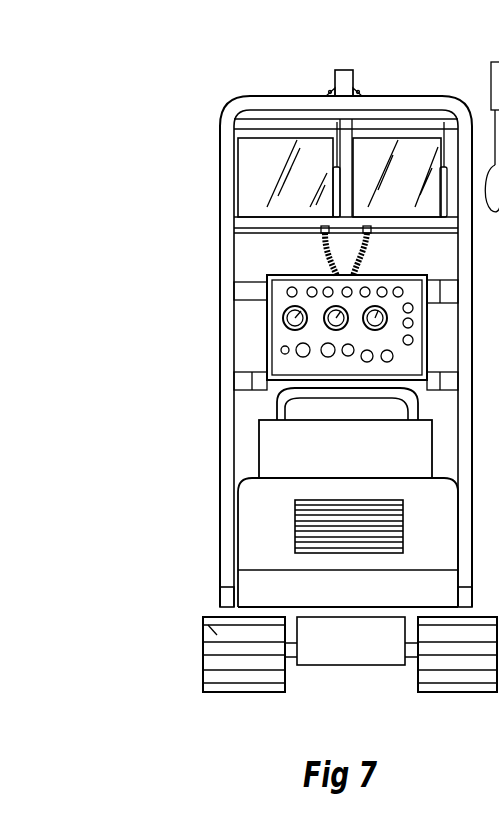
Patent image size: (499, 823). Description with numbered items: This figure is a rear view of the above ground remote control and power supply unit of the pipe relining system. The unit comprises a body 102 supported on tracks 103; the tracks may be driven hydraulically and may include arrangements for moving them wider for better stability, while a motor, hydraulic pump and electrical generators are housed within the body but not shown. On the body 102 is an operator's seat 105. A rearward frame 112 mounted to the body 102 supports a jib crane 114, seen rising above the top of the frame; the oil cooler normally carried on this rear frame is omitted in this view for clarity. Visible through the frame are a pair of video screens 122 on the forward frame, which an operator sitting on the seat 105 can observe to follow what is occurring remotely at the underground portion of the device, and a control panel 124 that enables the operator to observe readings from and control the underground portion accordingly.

The rearward frame 112 is at (233, 103).
The jib crane 114 is at (337, 71).
The video screens 122 is at (250, 167).
The control panel 124 is at (282, 298).
The operator's seat 105 is at (277, 396).
The body 102 is at (282, 457).
The tracks 103 is at (203, 618).